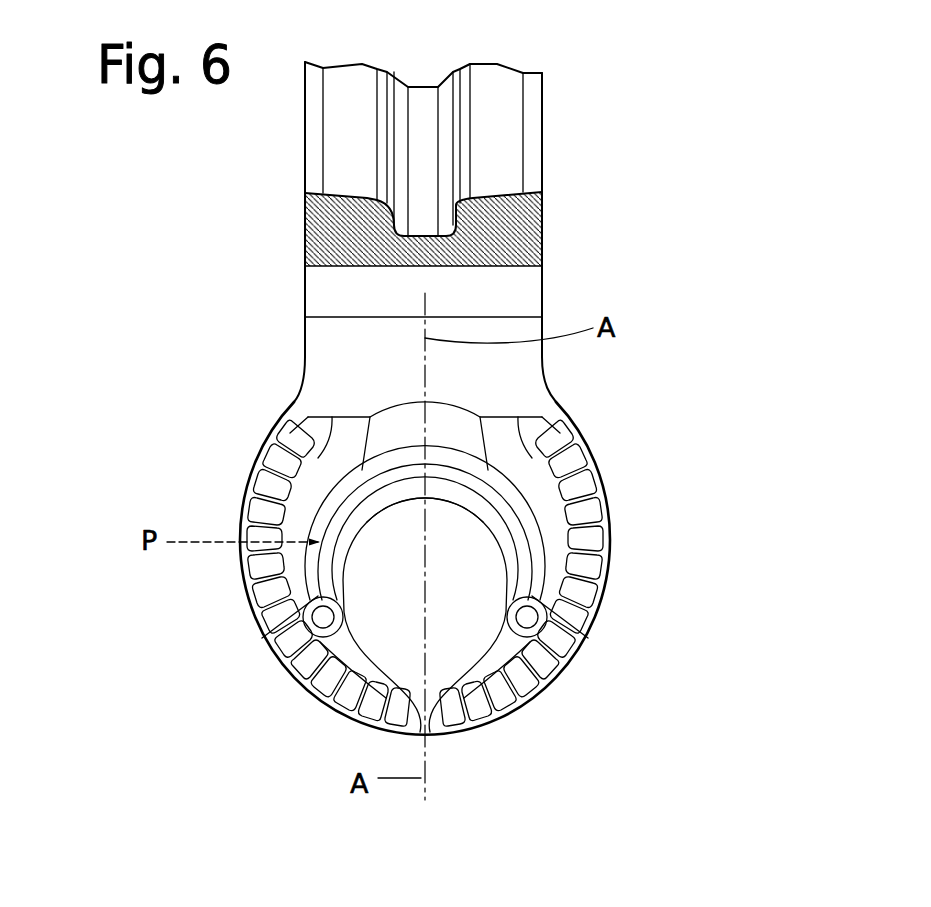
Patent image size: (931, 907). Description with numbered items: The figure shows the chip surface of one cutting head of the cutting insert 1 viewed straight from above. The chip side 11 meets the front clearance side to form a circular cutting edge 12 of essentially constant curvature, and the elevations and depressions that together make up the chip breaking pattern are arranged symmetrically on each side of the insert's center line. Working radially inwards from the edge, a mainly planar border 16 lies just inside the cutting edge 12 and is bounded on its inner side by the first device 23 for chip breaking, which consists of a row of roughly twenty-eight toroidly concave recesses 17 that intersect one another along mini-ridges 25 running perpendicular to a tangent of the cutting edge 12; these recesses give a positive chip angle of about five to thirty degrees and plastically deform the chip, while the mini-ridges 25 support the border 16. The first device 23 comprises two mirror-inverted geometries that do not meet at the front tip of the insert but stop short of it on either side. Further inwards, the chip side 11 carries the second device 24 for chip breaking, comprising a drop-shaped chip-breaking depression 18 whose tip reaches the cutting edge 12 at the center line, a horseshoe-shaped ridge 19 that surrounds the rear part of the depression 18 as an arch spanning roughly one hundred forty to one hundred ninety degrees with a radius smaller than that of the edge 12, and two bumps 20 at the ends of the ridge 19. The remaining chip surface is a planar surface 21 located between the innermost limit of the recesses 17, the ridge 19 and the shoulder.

The cutting insert 1 is at (560, 226).
The chip side 11 is at (327, 468).
The cutting edge 12 is at (322, 705).
The planar border 16 is at (261, 467).
The recesses 17 is at (263, 572).
The chip-breaking depression 18 is at (388, 573).
The horseshoe-shaped ridge 19 is at (528, 525).
The bumps 20 is at (314, 636).
The planar surface 21 is at (520, 478).
The first device for chip breaking 23 is at (270, 598).
The second device for chip breaking 24 is at (444, 508).
The mini-ridges 25 is at (265, 636).